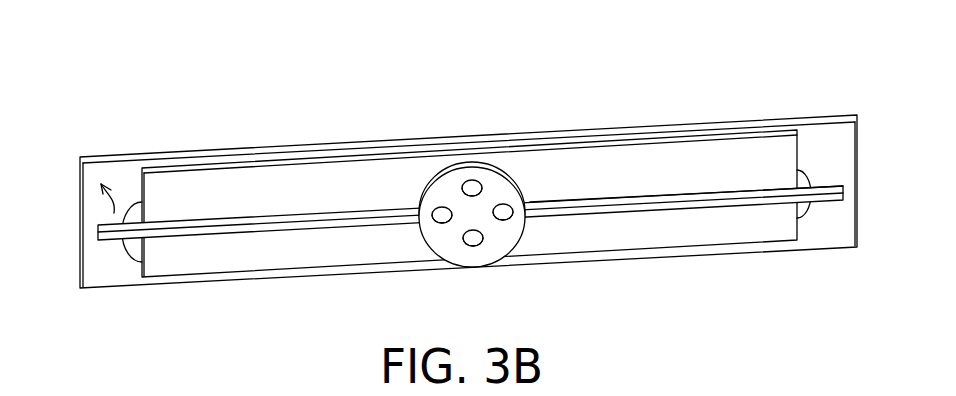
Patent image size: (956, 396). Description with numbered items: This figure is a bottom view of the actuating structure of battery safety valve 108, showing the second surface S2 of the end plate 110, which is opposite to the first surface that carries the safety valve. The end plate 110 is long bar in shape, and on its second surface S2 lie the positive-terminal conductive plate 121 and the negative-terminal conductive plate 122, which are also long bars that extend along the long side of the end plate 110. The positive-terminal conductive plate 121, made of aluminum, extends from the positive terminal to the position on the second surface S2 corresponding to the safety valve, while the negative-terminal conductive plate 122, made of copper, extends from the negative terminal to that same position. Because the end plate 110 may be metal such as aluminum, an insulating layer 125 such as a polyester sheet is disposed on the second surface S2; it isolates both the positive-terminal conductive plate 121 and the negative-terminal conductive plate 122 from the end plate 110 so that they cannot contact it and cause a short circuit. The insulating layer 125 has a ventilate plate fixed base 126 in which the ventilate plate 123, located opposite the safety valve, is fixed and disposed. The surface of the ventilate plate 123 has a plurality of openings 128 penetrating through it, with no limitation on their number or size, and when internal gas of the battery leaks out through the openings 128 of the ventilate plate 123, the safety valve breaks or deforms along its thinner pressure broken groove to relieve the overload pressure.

The actuating structure of battery safety valve 108 is at (70, 68).
The end plate 110 is at (127, 176).
The positive-terminal conductive plate 121 is at (263, 218).
The negative-terminal conductive plate 122 is at (682, 195).
The ventilate plate 123 is at (474, 201).
The insulating layer 125 is at (348, 185).
The ventilate plate fixed base 126 is at (463, 162).
The openings 128 is at (473, 247).
The second surface S2 is at (114, 213).